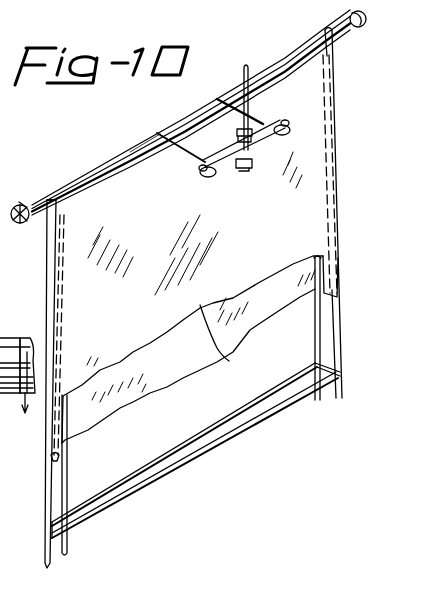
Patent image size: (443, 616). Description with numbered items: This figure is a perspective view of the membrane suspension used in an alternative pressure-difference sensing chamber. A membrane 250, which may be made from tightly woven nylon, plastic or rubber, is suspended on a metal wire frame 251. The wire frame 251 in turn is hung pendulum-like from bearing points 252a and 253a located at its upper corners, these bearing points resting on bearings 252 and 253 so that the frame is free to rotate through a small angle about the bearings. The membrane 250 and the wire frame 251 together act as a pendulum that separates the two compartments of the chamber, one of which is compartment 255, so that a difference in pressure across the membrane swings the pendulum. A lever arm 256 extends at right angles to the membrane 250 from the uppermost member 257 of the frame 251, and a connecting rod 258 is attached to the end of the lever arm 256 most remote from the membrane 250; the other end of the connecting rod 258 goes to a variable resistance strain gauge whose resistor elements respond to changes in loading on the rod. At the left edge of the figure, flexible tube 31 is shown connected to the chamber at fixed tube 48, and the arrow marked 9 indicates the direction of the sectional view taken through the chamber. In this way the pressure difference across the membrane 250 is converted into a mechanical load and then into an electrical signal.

The membrane 250 is at (224, 342).
The metal wire frame 251 is at (125, 478).
The bearing 252 is at (350, 28).
The bearing point 252a is at (350, 14).
The bearing 253 is at (27, 220).
The bearing point 253a is at (15, 204).
The compartment 255 is at (171, 298).
The lever arm 256 is at (200, 168).
The uppermost member 257 is at (140, 146).
The connecting rod 258 is at (243, 72).
The adjacent member 48 is at (7, 337).
The flexible tube 31 is at (32, 338).
The view direction arrow 9 is at (25, 414).